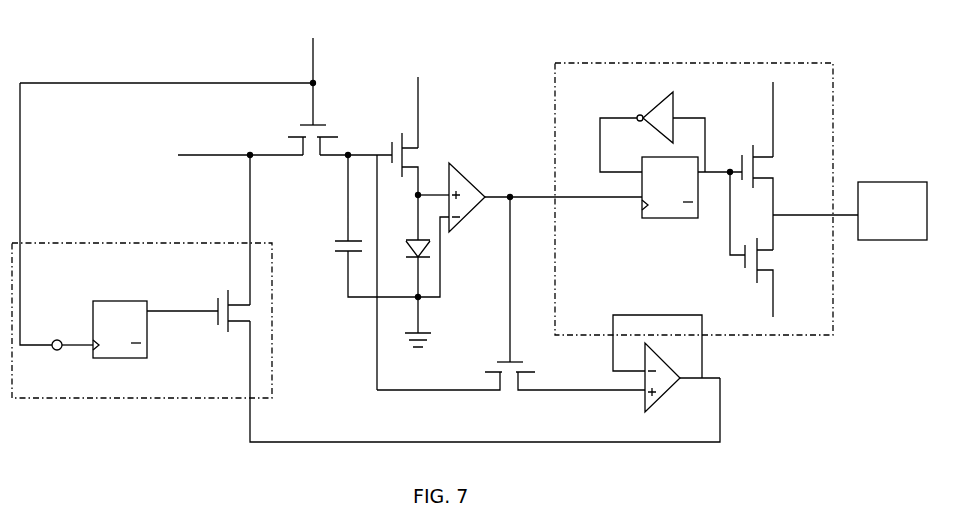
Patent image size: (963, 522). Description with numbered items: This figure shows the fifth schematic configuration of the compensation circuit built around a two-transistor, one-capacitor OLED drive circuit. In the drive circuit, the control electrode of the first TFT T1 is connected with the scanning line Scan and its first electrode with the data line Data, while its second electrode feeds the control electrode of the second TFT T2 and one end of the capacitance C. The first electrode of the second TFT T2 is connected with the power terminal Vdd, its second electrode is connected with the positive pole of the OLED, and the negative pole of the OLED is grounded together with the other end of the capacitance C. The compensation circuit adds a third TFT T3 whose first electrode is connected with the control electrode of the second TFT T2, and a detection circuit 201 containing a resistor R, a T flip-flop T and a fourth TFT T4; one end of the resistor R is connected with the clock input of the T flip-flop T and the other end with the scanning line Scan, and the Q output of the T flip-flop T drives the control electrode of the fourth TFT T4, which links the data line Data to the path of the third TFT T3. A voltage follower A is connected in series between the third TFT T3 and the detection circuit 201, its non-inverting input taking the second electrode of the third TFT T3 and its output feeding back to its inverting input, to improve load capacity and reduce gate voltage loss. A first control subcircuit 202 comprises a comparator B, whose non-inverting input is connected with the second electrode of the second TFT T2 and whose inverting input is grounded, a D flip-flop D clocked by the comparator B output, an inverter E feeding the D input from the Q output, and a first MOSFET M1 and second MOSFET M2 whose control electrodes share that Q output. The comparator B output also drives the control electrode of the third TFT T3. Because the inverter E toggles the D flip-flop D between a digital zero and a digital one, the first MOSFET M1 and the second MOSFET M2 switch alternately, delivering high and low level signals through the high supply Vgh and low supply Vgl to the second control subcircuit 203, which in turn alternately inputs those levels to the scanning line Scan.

The detection circuit 201 is at (92, 400).
The first control subcircuit 202 is at (555, 83).
The second control subcircuit 203 is at (910, 240).
The first TFT T1 is at (320, 123).
The second TFT T2 is at (408, 176).
The third TFT T3 is at (511, 361).
The fourth TFT T4 is at (209, 318).
The T flip-flop T is at (155, 350).
The D flip-flop D is at (693, 209).
The inverter E is at (652, 128).
The voltage follower A is at (666, 367).
The comparator B is at (545, 262).
The capacitance C is at (339, 245).
The organic light-emitting diode OLED is at (404, 293).
The first MOSFET M1 is at (765, 187).
The second MOSFET M2 is at (760, 269).
The resistor R is at (56, 230).
The scanning line Scan is at (174, 70).
The data line Data is at (215, 155).
The power terminal Vdd is at (416, 101).
The high gate voltage Vgh is at (790, 119).
The low gate voltage Vgl is at (797, 314).